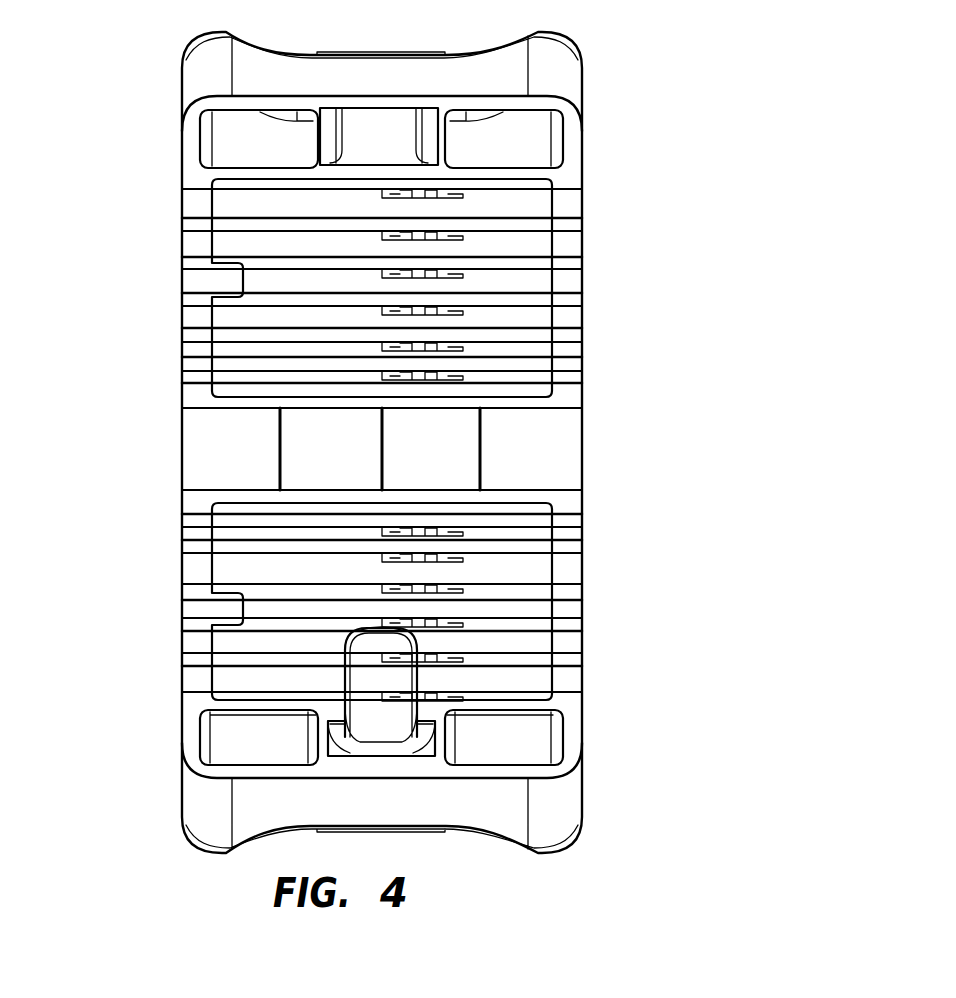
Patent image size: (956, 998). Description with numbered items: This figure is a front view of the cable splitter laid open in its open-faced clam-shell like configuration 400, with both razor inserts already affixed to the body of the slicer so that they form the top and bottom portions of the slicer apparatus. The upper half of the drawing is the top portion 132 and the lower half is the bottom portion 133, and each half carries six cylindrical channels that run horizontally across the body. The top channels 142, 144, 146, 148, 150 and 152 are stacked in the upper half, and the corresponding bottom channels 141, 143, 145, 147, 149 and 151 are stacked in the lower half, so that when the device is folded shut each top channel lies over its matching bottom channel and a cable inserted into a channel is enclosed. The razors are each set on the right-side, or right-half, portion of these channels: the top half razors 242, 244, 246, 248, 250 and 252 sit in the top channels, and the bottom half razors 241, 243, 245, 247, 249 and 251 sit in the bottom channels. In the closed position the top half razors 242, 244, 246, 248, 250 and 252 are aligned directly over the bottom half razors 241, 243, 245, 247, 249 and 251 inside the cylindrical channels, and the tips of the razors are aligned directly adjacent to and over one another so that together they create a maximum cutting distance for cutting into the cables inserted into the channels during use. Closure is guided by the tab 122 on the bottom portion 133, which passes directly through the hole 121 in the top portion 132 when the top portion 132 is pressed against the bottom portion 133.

The open-faced clam-shell like configuration 400 is at (73, 18).
The hole 121 is at (363, 137).
The tab 122 is at (373, 683).
The top portion 132 is at (558, 73).
The bottom portion 133 is at (563, 795).
The bottom channel 141 is at (568, 688).
The top channel 142 is at (568, 198).
The bottom channel 143 is at (568, 649).
The top channel 144 is at (568, 240).
The bottom channel 145 is at (568, 614).
The top channel 146 is at (568, 278).
The bottom channel 147 is at (568, 580).
The top channel 148 is at (568, 315).
The bottom channel 149 is at (568, 549).
The top channel 150 is at (568, 351).
The bottom channel 151 is at (568, 523).
The top channel 152 is at (568, 380).
The bottom half razor 241 is at (435, 688).
The top half razor 242 is at (382, 192).
The bottom half razor 243 is at (432, 650).
The top half razor 244 is at (382, 235).
The bottom half razor 245 is at (382, 618).
The top half razor 246 is at (382, 273).
The bottom half razor 247 is at (382, 585).
The top half razor 248 is at (382, 309).
The bottom half razor 249 is at (382, 554).
The top half razor 250 is at (382, 346).
The bottom half razor 251 is at (382, 528).
The top half razor 252 is at (382, 374).